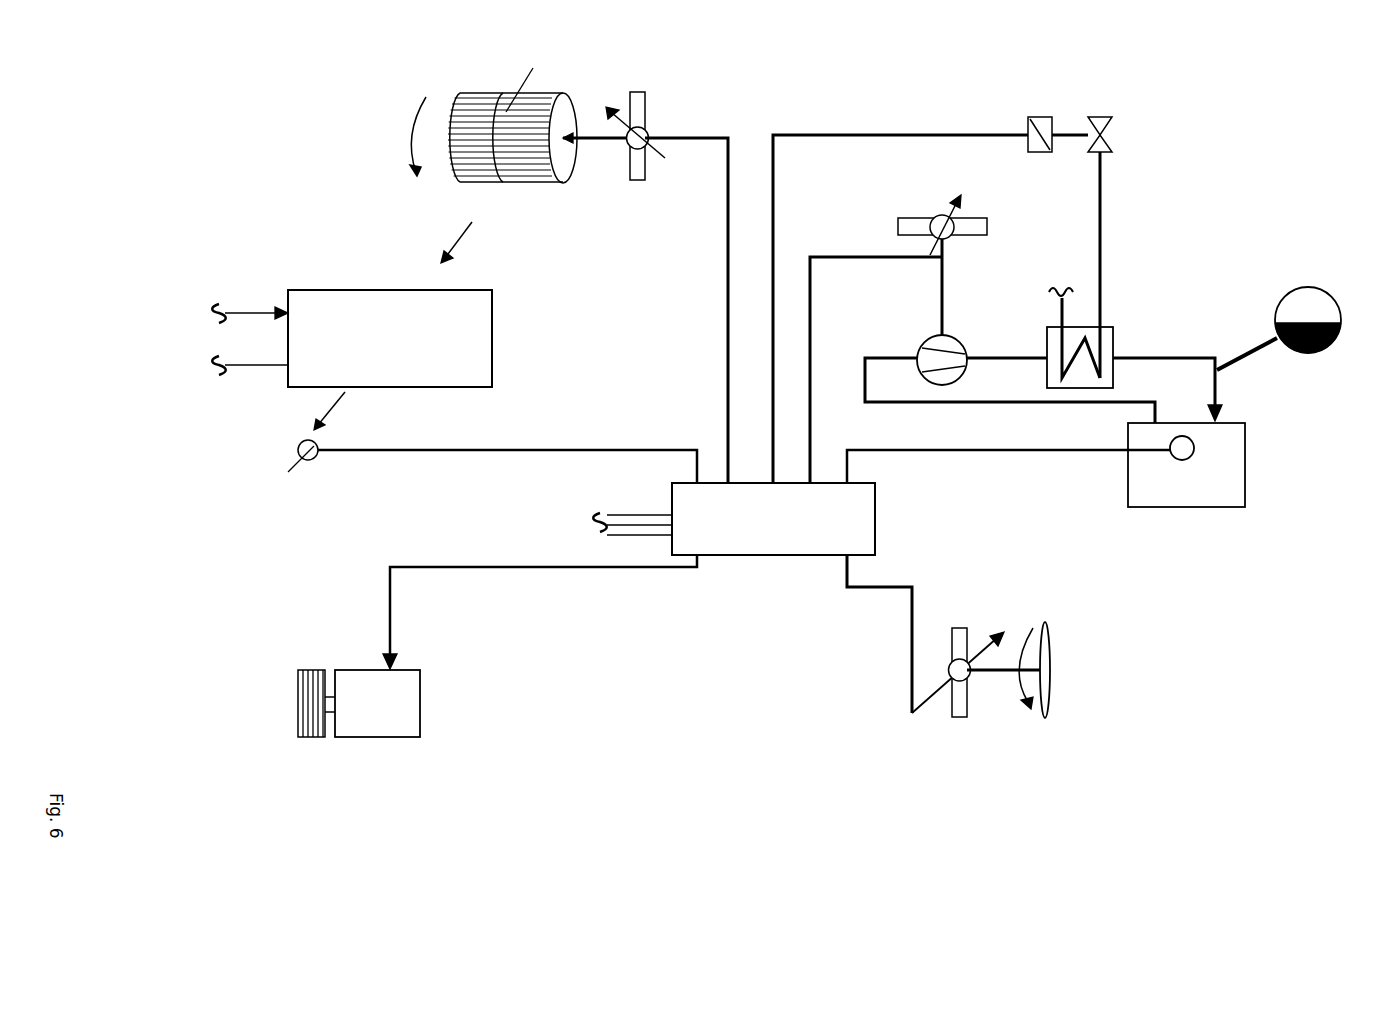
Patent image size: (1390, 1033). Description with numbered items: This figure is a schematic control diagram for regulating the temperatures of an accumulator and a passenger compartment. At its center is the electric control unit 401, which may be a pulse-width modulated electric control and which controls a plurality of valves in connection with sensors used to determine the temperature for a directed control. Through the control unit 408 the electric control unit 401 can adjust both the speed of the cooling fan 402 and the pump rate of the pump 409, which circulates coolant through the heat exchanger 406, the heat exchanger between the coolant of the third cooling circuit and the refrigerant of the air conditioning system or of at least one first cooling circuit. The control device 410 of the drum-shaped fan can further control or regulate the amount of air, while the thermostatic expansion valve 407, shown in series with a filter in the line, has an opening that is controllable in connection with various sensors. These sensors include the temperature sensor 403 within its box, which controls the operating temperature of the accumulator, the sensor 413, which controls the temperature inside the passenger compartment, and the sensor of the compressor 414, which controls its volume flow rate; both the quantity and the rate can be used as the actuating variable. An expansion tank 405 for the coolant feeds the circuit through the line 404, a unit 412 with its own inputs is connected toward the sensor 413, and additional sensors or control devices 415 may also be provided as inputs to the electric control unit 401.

The electric control unit 401 is at (773, 519).
The cooling fan 402 is at (948, 636).
The temperature sensor 403 is at (1046, 465).
The water feed line 404 is at (1289, 399).
The expansion tank 405 is at (1327, 347).
The heat exchanger 406 is at (1113, 332).
The thermostatic expansion valve 407 is at (1113, 134).
The control unit 408 is at (898, 333).
The pump 409 is at (953, 350).
The control device 410 is at (645, 122).
The power supply unit 412 is at (470, 337).
The sensor 413 is at (480, 448).
The compressor 414 is at (338, 738).
The additional sensors or control devices 415 is at (606, 524).